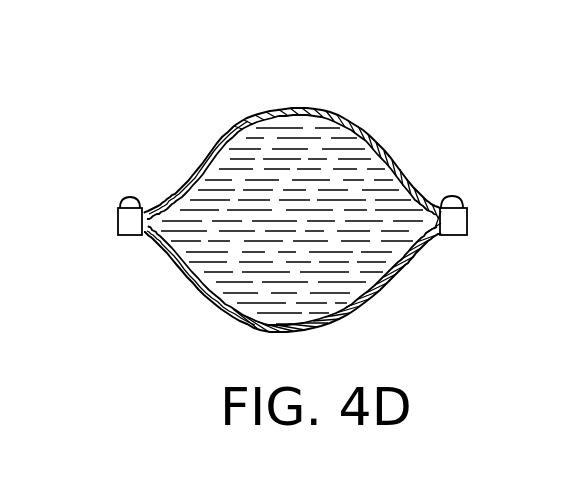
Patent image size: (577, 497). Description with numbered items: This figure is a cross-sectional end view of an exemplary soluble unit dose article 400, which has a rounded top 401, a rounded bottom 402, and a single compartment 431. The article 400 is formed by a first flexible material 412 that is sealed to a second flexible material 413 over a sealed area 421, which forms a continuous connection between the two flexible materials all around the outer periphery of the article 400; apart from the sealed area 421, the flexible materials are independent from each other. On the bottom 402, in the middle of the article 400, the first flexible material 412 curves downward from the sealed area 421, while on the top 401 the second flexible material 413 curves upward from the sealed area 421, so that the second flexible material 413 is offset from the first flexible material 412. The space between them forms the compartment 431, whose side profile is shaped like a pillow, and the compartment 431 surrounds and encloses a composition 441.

The soluble unit dose article 400 is at (134, 105).
The rounded top 401 is at (198, 112).
The rounded bottom 402 is at (204, 335).
The first flexible material 412 is at (182, 270).
The second flexible material 413 is at (197, 161).
The sealed area 421 is at (130, 197).
The compartment 431 is at (337, 278).
The composition 441 is at (313, 262).